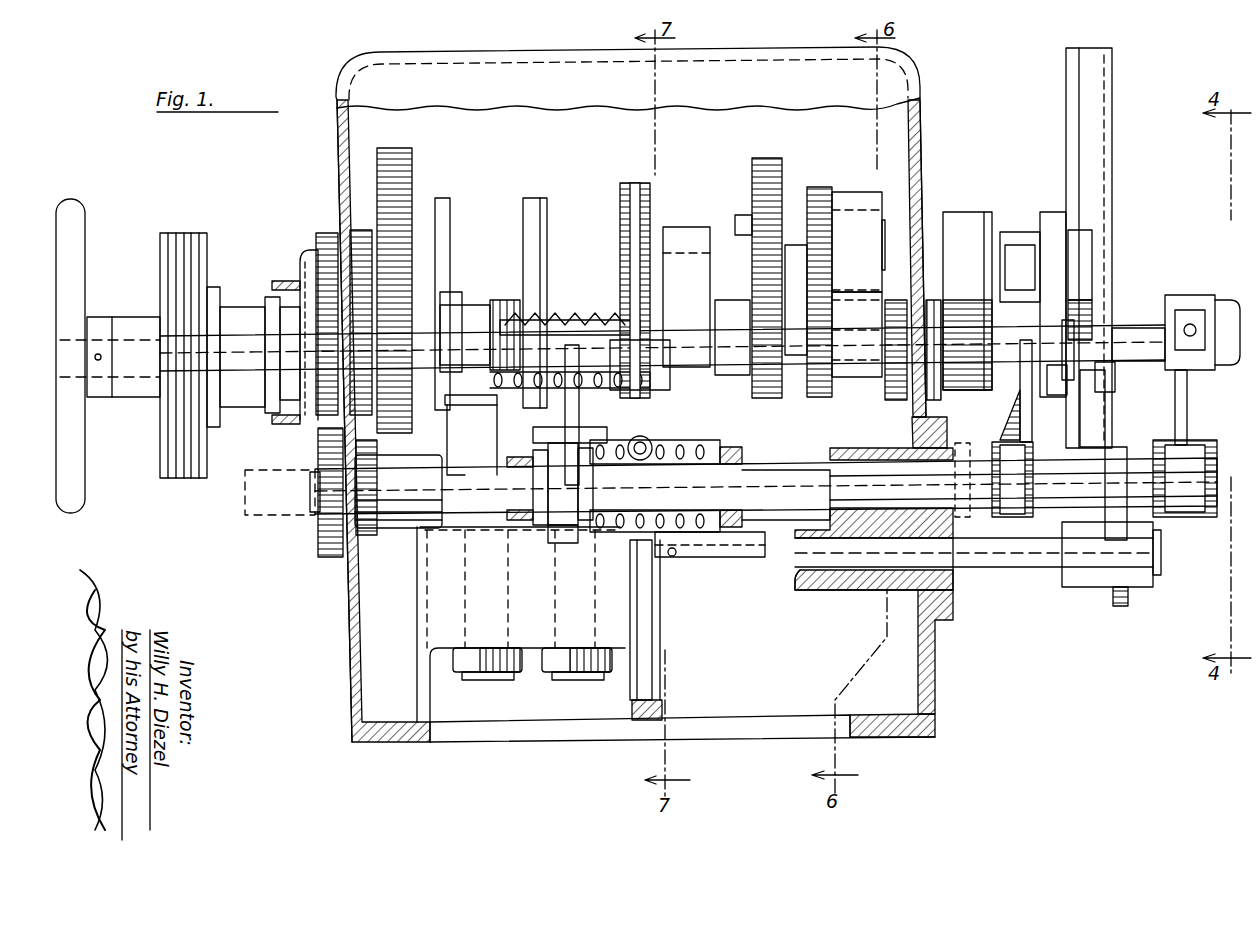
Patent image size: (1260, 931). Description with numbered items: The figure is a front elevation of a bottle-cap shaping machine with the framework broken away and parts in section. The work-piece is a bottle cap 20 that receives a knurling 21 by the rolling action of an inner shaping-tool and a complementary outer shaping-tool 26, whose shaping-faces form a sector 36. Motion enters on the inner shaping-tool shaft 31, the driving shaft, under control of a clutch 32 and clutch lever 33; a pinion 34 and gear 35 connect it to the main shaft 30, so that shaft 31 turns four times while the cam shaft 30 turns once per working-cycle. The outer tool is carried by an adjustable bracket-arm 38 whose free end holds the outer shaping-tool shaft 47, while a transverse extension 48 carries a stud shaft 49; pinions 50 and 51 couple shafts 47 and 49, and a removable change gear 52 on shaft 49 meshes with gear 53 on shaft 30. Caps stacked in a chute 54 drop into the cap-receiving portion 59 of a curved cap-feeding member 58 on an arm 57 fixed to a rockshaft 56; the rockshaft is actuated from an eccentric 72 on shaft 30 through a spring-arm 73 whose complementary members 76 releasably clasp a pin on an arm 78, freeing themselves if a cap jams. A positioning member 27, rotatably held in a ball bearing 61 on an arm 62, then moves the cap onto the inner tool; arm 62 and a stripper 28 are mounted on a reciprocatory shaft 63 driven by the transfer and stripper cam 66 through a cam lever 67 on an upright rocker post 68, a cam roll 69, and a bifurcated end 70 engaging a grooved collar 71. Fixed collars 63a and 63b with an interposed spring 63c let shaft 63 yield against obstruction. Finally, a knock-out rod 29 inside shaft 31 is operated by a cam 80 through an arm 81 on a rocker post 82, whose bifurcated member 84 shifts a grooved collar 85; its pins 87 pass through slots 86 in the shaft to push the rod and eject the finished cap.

The bottle cap 20 is at (1062, 364).
The knurling 21 is at (1070, 320).
The outer shaping-tool 26 is at (1058, 208).
The positioning member 27 is at (1130, 328).
The stripper 28 is at (1020, 392).
The knock-out rod 29 is at (722, 346).
The main shaft 30 is at (312, 248).
The inner shaping-tool shaft 31 is at (848, 358).
The clutch 32 is at (272, 295).
The clutch lever 33 is at (285, 425).
The pinion 34 is at (400, 433).
The gear 35 is at (395, 148).
The sector 36 is at (1090, 280).
The bracket-arm 38 is at (962, 212).
The outer shaping-tool shaft 47 is at (1003, 245).
The transverse extension 48 is at (857, 313).
The stud shaft 49 is at (850, 210).
The pinion 50 is at (820, 300).
The pinion 51 is at (817, 187).
The gear 52 is at (767, 158).
The gear 53 is at (752, 346).
The chute 54 is at (1112, 53).
The rockshaft 56 is at (1045, 570).
The arm 57 is at (1128, 606).
The cap-feeding member 58 is at (1095, 432).
The cap-receiving portion 59 is at (1092, 380).
The ball bearing 61 is at (1190, 315).
The arm 62 is at (1185, 420).
The reciprocatory shaft 63 is at (768, 480).
The collar 63a is at (512, 532).
The collar 63b is at (755, 530).
The spring 63c is at (692, 440).
The transfer and stripper cam 66 is at (542, 198).
The cam lever 67 is at (620, 428).
The upright rocker post 68 is at (578, 680).
The cam roll 69 is at (582, 388).
The bifurcated end 70 is at (552, 540).
The grooved collar 71 is at (586, 532).
The eccentric 72 is at (652, 196).
The spring-arm 73 is at (652, 680).
The complementary members 76 is at (690, 535).
The arm 78 is at (680, 570).
The cam 80 is at (442, 198).
The arm 81 is at (452, 405).
The upright rocker post 82 is at (488, 680).
The bifurcated member 84 is at (455, 305).
The grooved collar 85 is at (540, 388).
The slots 86 is at (548, 318).
The pins 87 is at (505, 318).